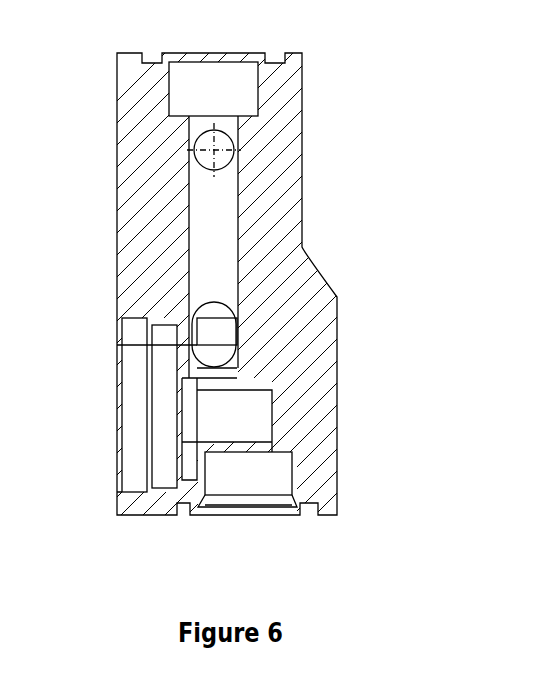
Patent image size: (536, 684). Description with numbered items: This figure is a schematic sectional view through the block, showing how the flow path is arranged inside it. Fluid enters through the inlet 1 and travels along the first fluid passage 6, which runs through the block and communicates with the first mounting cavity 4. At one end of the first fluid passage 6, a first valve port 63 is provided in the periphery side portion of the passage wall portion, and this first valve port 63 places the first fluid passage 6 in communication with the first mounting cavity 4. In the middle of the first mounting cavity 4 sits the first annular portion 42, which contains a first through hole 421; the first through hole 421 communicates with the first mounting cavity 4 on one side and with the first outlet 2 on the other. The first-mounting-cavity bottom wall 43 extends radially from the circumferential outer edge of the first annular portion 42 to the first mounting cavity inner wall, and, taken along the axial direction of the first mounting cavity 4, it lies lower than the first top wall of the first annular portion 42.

The inlet 1 is at (228, 58).
The first fluid passage 6 is at (208, 202).
The first valve port 63 is at (208, 307).
The first mounting cavity 4 is at (170, 412).
The first annular portion 42 is at (197, 453).
The first-mounting-cavity bottom wall 43 is at (130, 483).
The first through hole 421 is at (273, 392).
The first outlet 2 is at (262, 507).